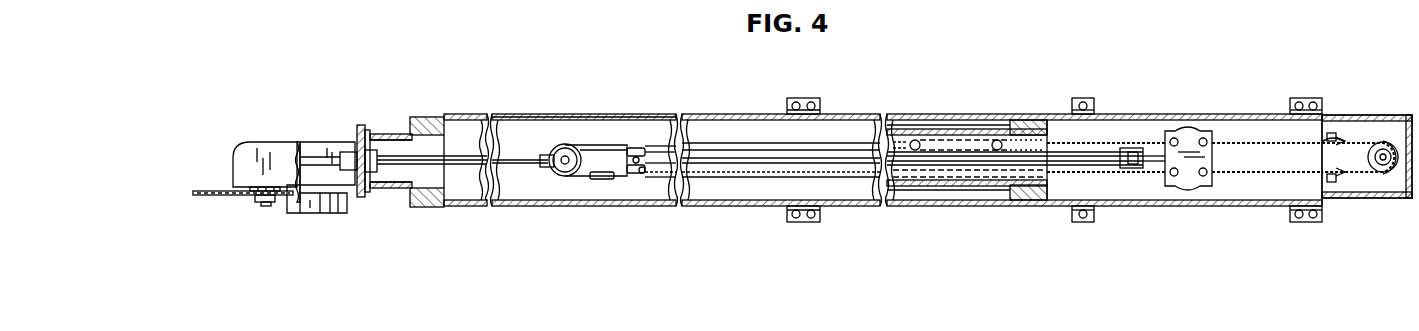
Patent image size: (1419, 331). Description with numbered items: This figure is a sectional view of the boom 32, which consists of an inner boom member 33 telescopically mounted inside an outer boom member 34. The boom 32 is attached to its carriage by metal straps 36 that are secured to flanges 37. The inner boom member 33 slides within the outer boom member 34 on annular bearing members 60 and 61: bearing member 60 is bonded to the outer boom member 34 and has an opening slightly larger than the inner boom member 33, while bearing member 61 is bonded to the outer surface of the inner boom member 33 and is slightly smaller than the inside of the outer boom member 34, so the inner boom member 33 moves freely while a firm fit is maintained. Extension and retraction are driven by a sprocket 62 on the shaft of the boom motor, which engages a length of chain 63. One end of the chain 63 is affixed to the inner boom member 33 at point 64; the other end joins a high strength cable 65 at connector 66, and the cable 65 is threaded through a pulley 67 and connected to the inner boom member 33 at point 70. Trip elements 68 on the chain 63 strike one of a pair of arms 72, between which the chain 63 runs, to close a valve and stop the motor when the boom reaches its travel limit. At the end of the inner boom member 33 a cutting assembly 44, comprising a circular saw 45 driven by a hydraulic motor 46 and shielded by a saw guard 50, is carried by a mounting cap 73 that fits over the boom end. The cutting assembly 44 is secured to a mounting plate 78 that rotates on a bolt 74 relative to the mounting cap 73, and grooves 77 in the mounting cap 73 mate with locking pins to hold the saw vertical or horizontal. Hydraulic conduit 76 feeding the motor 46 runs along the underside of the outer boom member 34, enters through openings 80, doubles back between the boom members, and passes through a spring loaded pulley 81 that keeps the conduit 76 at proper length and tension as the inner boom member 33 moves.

The boom 32 is at (736, 79).
The inner boom member 33 is at (452, 117).
The outer boom member 34 is at (598, 114).
The metal straps 36 is at (804, 98).
The flanges 37 is at (822, 104).
The cutting assembly 44 is at (224, 200).
The circular saw 45 is at (215, 191).
The hydraulic motor 46 is at (303, 152).
The saw guard 50 is at (322, 213).
The bearing member 60 is at (425, 118).
The bearing member 61 is at (1026, 121).
The sprocket 62 is at (1383, 142).
The chain 63 is at (750, 200).
The point 64 is at (995, 140).
The cable 65 is at (613, 145).
The connector 66 is at (601, 180).
The pulley 67 is at (563, 144).
The trip elements 68 is at (636, 174).
The point 70 is at (913, 140).
The arms 72 is at (1345, 150).
The mounting cap 73 is at (386, 135).
The bolt 74 is at (350, 153).
The hydraulic conduit 76 is at (431, 165).
The grooves 77 is at (369, 130).
The mounting plate 78 is at (360, 125).
The openings 80 is at (641, 150).
The pulley 81 is at (1180, 130).